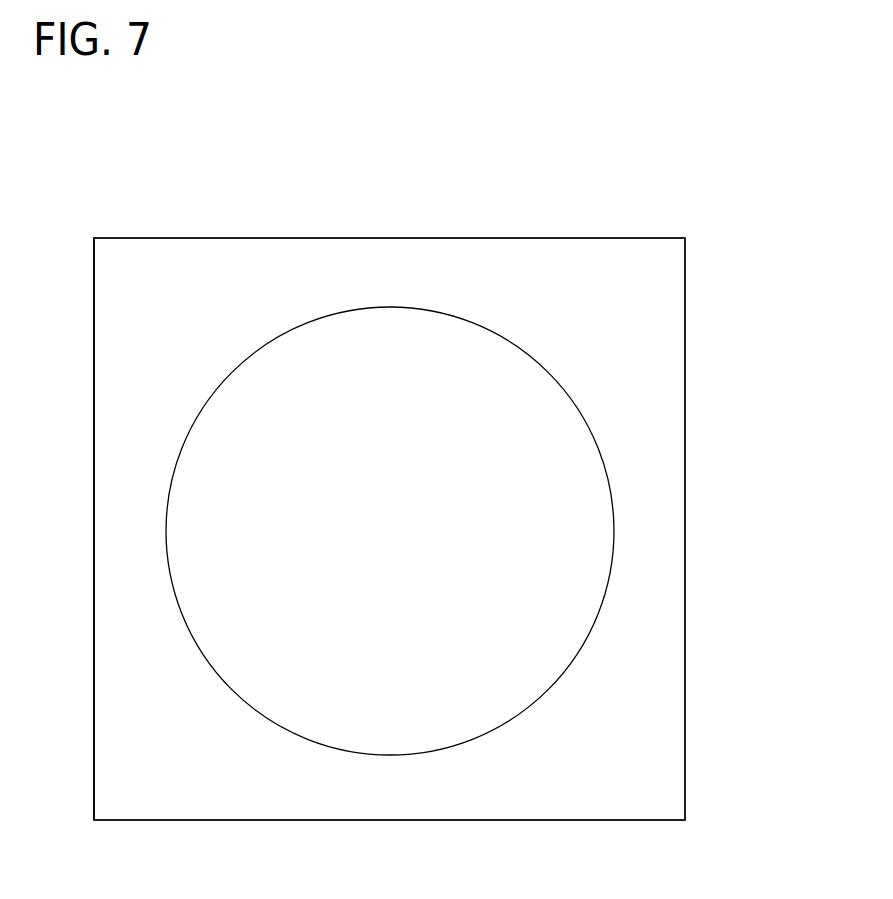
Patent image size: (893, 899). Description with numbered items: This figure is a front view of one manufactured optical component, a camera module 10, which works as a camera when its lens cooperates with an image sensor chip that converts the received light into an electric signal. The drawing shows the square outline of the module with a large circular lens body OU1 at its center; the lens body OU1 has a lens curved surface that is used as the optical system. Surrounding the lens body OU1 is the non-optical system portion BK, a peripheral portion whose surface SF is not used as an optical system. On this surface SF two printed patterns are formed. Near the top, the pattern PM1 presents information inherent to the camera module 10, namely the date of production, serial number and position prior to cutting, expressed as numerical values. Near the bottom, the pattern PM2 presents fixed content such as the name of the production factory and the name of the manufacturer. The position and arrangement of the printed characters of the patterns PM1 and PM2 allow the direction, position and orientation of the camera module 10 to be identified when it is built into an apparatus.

The camera module 10 is at (532, 94).
The surface SF is at (570, 257).
The non-optical system portion BK is at (137, 400).
The lens body OU1 is at (578, 545).
The pattern PM1 is at (231, 253).
The pattern PM2 is at (385, 802).